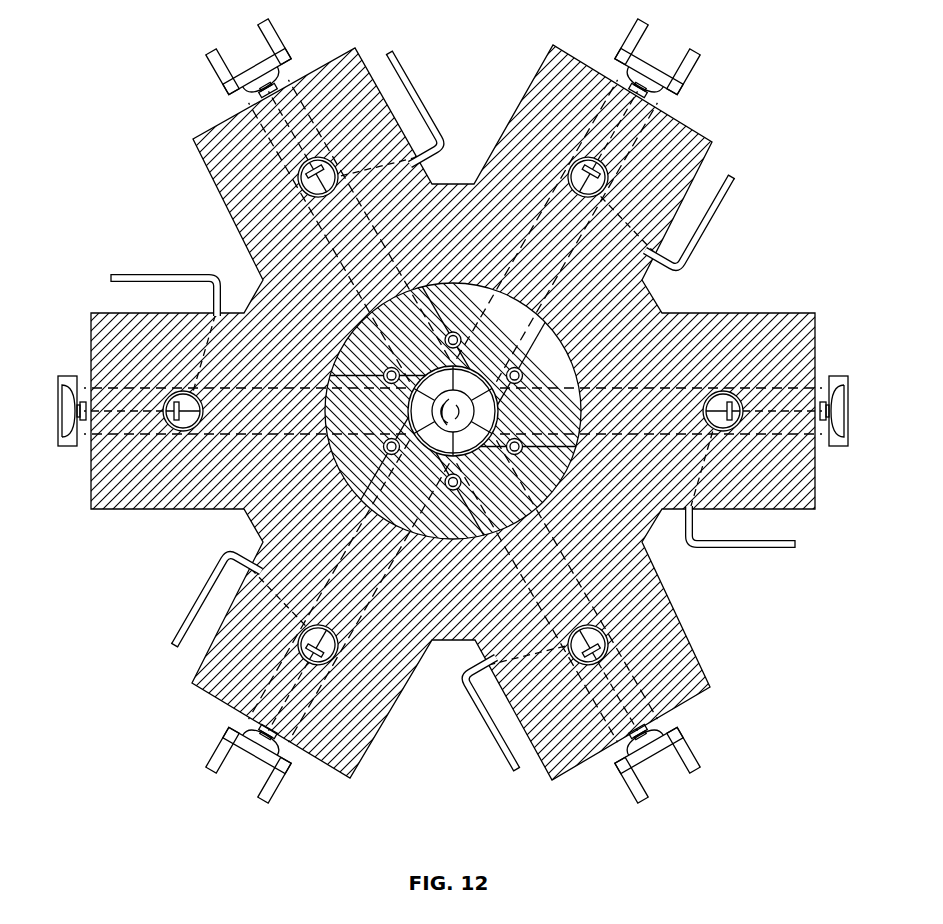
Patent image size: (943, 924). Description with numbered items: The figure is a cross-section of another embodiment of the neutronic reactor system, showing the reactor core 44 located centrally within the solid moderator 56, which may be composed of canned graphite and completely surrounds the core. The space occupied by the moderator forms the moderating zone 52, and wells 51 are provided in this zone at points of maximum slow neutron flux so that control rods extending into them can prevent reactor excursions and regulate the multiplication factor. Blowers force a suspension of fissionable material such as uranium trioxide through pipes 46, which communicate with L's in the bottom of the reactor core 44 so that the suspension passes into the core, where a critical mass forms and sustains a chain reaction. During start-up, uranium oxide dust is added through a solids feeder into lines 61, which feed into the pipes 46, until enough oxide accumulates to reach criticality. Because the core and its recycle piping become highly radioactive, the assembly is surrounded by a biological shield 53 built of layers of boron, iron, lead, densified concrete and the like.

The reactor core 44 is at (468, 462).
The pipes 46 is at (372, 203).
The wells 51 is at (383, 376).
The moderating zone 52 is at (469, 287).
The shield 53 is at (322, 48).
The solid moderator 56 is at (355, 350).
The lines 61 is at (412, 90).